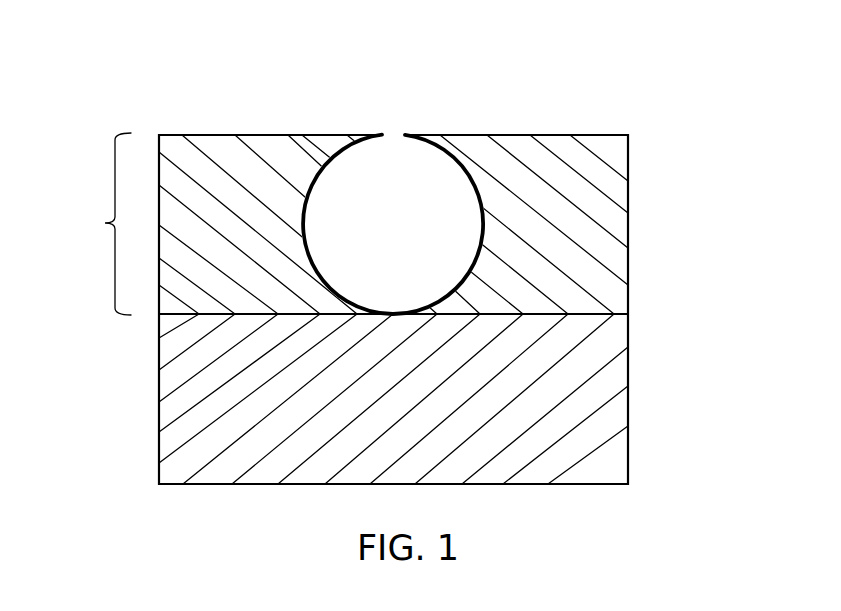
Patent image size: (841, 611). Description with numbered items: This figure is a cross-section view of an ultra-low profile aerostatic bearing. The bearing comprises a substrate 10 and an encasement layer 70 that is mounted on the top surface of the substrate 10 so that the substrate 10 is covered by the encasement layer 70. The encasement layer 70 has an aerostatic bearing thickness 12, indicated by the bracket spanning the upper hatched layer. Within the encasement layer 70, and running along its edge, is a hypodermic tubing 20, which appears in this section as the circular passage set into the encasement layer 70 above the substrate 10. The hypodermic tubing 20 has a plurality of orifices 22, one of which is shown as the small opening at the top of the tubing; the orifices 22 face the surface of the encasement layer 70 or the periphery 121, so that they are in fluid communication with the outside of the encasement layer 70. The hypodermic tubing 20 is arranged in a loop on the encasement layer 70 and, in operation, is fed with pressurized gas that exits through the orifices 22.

The substrate 10 is at (192, 402).
The aerostatic bearing thickness 12 is at (341, 224).
The periphery 121 is at (320, 152).
The hypodermic tubing 20 is at (478, 184).
The orifices 22 is at (392, 137).
The encasement layer 70 is at (193, 160).